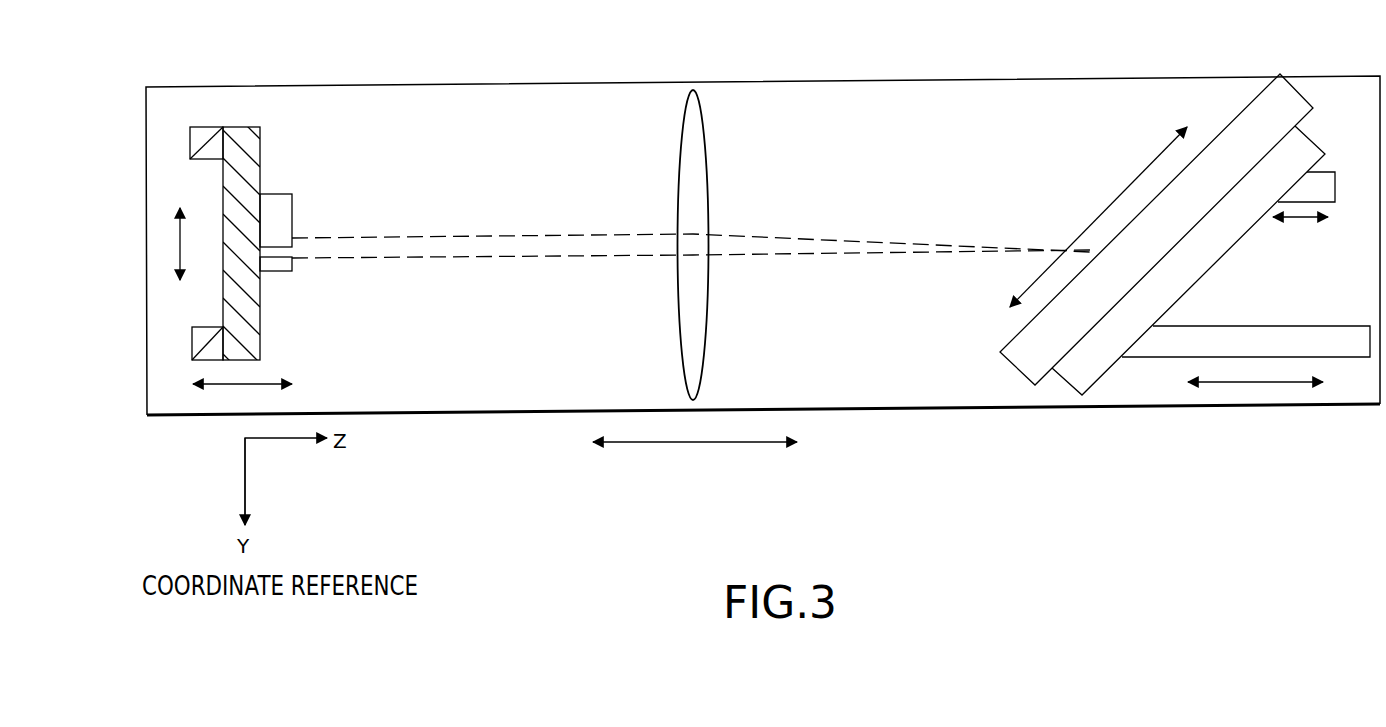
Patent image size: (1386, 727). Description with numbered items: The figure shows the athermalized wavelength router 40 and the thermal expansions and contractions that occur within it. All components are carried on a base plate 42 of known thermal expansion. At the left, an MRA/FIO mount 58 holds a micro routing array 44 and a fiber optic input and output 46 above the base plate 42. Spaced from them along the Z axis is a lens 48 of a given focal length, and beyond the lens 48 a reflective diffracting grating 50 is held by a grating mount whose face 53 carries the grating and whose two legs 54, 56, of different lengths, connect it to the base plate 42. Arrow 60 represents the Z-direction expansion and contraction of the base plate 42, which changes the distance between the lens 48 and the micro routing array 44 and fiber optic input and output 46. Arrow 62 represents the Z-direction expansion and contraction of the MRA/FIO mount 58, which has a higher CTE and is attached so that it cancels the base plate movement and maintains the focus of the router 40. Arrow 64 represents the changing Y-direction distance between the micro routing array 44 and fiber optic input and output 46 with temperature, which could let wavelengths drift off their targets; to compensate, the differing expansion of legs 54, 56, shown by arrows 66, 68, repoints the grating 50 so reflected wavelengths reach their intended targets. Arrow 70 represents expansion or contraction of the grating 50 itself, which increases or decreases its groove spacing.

The wavelength router 40 is at (1008, 55).
The base plate 42 is at (475, 95).
The micro routing array 44 is at (278, 194).
The fiber optic input and output 46 is at (280, 271).
The lens 48 is at (708, 160).
The reflective diffracting grating 50 is at (1250, 95).
The face 53 is at (1207, 273).
The leg 54 is at (1330, 172).
The leg 56 is at (1290, 326).
The MRA/FIO mount 58 is at (241, 127).
The arrow 60 is at (715, 443).
The arrow 62 is at (280, 384).
The arrow 64 is at (180, 248).
The arrow 66 is at (1280, 382).
The arrow 68 is at (1300, 218).
The arrow 70 is at (1122, 192).